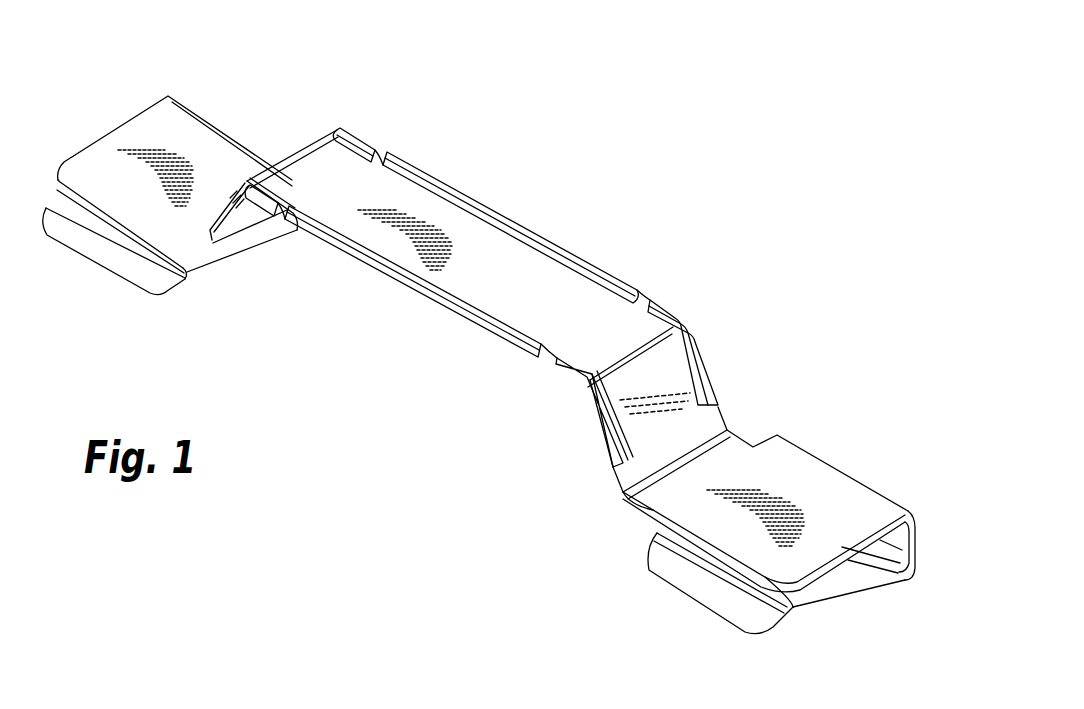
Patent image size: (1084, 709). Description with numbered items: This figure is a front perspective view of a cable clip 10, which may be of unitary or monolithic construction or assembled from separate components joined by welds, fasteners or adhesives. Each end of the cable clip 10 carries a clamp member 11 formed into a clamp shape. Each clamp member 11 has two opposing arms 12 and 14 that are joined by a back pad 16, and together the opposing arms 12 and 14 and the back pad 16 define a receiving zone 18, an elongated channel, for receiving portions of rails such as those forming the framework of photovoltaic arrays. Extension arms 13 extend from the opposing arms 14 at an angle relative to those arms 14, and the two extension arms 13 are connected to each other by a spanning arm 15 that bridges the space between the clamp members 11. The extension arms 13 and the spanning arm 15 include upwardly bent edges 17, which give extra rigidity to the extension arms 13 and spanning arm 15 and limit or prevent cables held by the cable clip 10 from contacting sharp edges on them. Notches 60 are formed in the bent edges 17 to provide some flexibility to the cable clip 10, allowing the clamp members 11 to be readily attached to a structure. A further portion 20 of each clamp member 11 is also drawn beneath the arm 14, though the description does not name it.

The cable clip 10 is at (645, 132).
The clamp member 11 is at (222, 103).
The opposing arm 12 is at (188, 284).
The extension arm 13 is at (251, 218).
The opposing arm 14 is at (80, 147).
The spanning arm 15 is at (539, 297).
The back pad 16 is at (913, 533).
The upwardly bent edges 17 is at (504, 223).
The receiving zone 18 is at (849, 562).
The lower plate 20 is at (98, 243).
The notches 60 is at (290, 195).